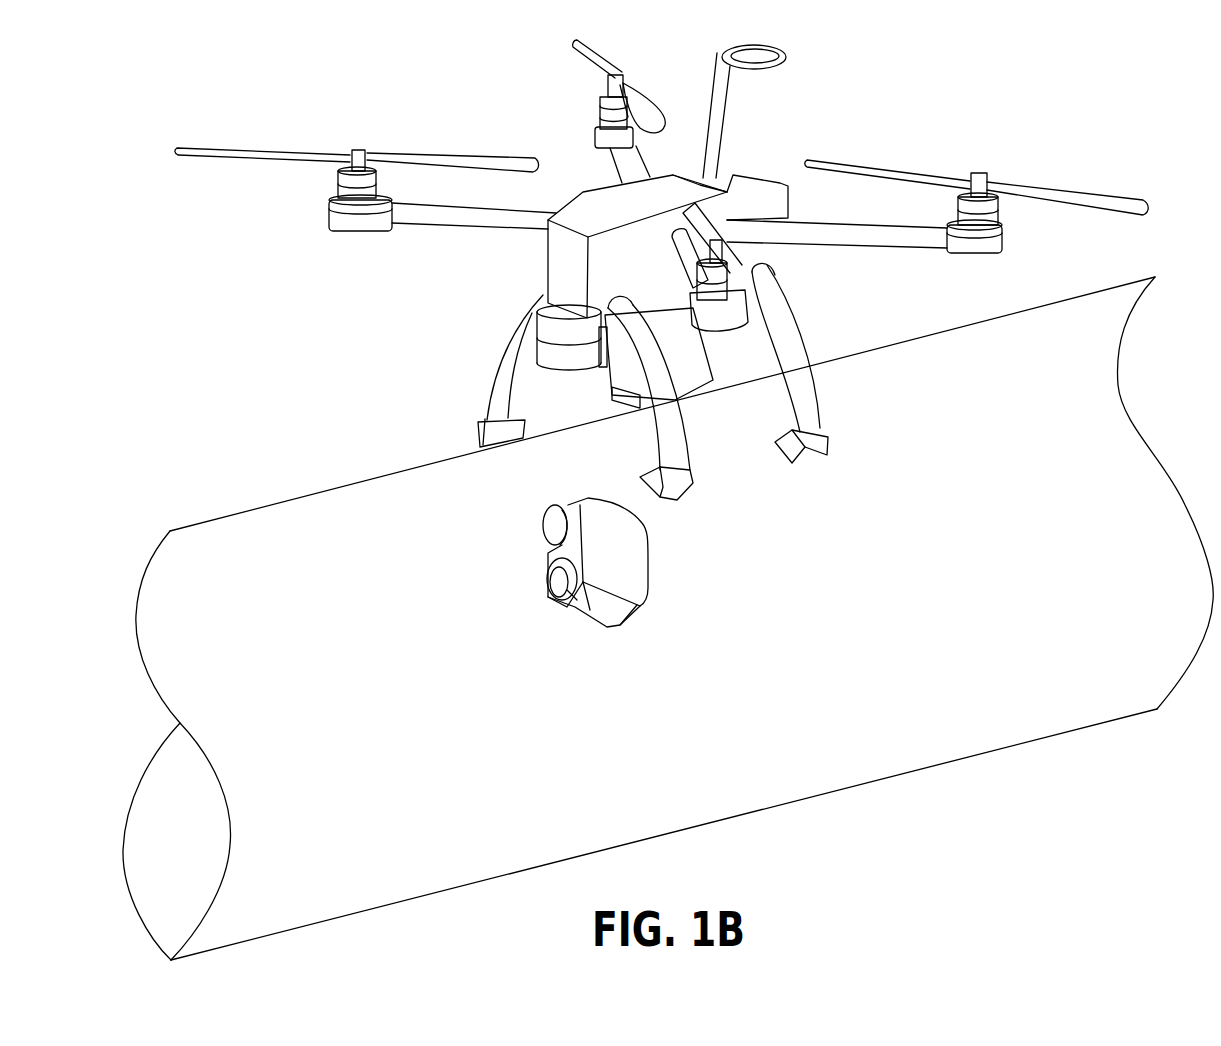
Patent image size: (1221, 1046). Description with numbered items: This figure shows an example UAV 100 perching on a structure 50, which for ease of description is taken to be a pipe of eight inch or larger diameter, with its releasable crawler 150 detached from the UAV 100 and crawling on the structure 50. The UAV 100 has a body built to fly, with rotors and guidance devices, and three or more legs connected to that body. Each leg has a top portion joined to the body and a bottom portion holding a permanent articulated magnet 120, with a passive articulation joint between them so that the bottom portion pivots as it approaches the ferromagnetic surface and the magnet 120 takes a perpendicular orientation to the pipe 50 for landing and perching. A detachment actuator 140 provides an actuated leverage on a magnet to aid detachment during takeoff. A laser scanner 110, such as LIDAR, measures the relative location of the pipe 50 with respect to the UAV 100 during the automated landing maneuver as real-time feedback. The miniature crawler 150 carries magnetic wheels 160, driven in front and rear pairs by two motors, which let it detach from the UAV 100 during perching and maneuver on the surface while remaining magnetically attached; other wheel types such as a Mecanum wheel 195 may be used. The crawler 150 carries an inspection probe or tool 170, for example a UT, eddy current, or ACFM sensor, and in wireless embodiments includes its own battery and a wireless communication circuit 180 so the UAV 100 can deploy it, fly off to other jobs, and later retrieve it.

The structure 50 is at (991, 428).
The UAV 100 is at (661, 297).
The laser scanner 110 is at (553, 343).
The articulated magnet 120 is at (478, 432).
The detachment actuator 140 is at (815, 455).
The crawler 150 is at (576, 600).
The magnetic wheel 160 is at (547, 578).
The probe or tool 170 is at (590, 610).
The wireless communication circuit 180 is at (637, 605).
The Mecanum wheel 195 is at (552, 523).